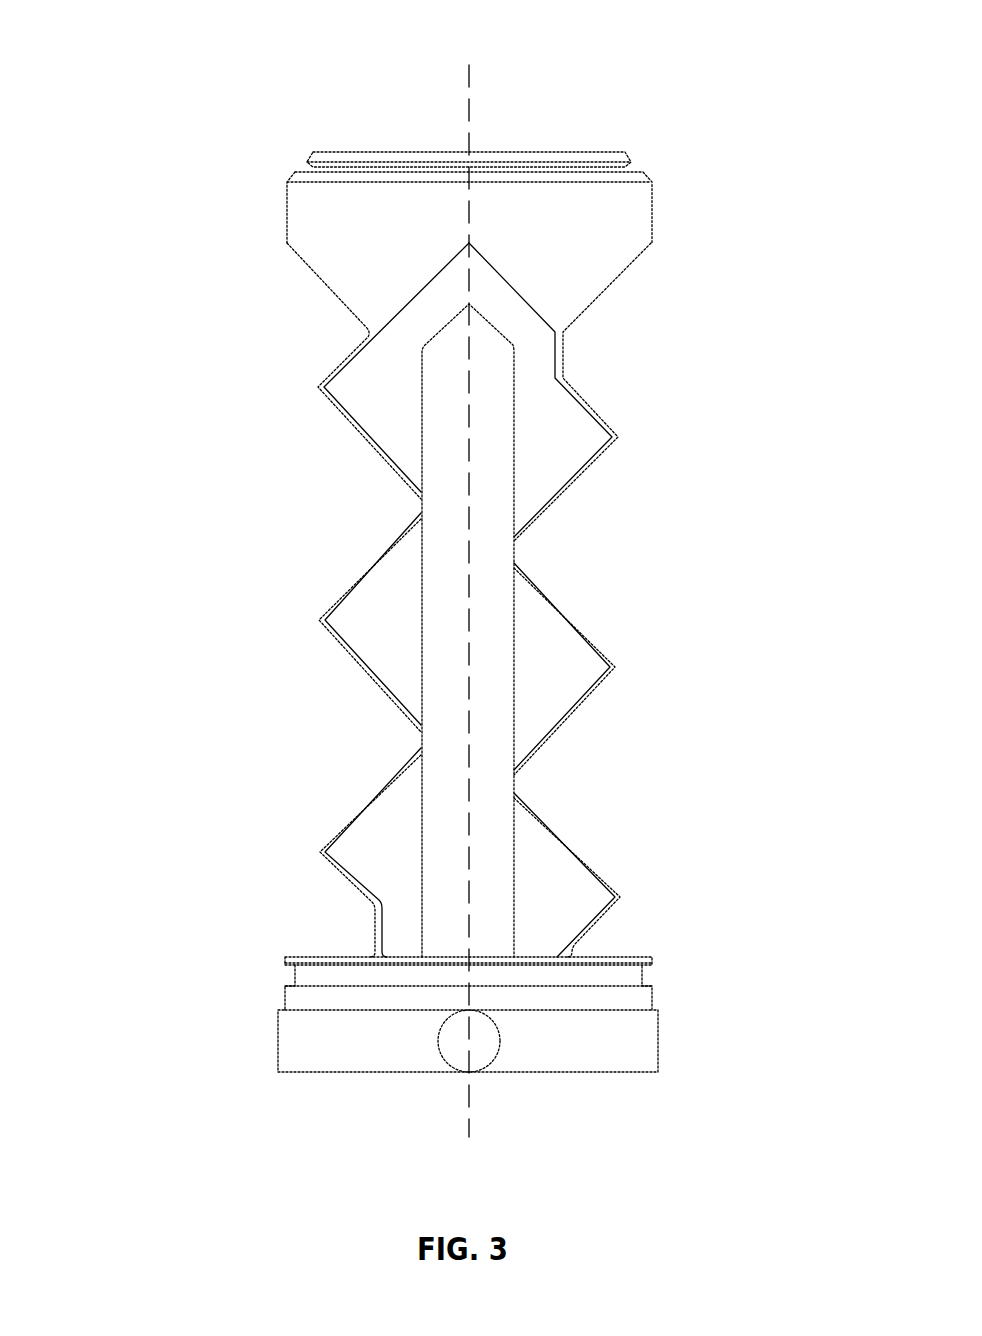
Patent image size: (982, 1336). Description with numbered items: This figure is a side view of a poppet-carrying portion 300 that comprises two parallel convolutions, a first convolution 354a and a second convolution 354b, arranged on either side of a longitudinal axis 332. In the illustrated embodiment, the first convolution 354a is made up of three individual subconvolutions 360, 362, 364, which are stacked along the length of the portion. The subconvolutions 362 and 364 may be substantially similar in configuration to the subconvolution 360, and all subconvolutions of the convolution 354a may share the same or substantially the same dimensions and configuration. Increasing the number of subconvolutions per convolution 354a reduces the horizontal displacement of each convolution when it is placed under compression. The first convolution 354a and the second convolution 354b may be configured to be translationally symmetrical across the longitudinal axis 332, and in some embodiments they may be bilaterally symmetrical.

The poppet-carrying portion 300 is at (813, 28).
The longitudinal axis 332 is at (467, 111).
The first convolution 354a is at (263, 600).
The second convolution 354b is at (696, 295).
The subconvolution 360 is at (273, 327).
The subconvolution 362 is at (273, 510).
The subconvolution 364 is at (310, 846).